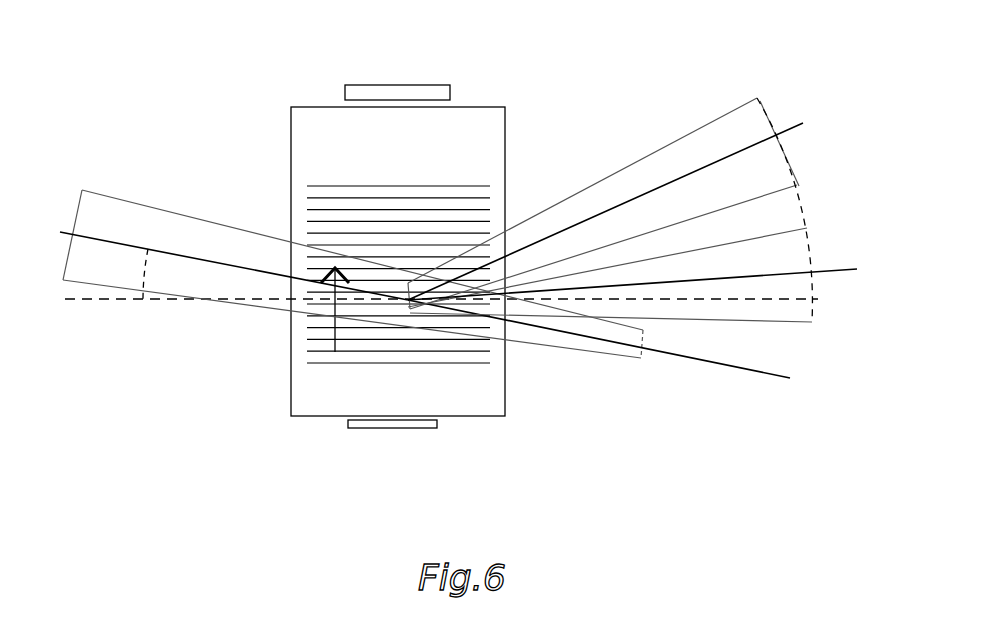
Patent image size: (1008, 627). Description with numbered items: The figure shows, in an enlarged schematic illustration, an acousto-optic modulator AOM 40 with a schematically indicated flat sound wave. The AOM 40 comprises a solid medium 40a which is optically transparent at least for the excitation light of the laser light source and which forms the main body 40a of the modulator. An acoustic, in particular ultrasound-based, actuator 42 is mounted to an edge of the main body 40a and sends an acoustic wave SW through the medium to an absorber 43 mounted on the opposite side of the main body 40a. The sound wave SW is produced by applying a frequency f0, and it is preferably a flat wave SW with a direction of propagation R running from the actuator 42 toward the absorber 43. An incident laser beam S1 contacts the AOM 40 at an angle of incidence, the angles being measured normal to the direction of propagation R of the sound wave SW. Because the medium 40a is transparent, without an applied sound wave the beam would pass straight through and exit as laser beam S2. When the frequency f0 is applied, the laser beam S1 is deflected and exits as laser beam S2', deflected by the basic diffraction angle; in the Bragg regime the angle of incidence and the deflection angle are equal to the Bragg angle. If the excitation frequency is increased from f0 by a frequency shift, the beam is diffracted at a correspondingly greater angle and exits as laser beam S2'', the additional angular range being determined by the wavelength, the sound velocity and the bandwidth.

The AOM 40 is at (262, 125).
The solid medium 40a is at (312, 386).
The acoustic actuator 42 is at (394, 436).
The absorber 43 is at (372, 83).
The sound wave SW is at (427, 202).
The direction of propagation R is at (333, 335).
The laser beam S1 is at (55, 228).
The laser beam S2 is at (599, 413).
The laser beam S2' is at (629, 299).
The deflected laser beam S2'' is at (603, 192).
The frequency f0 is at (642, 280).